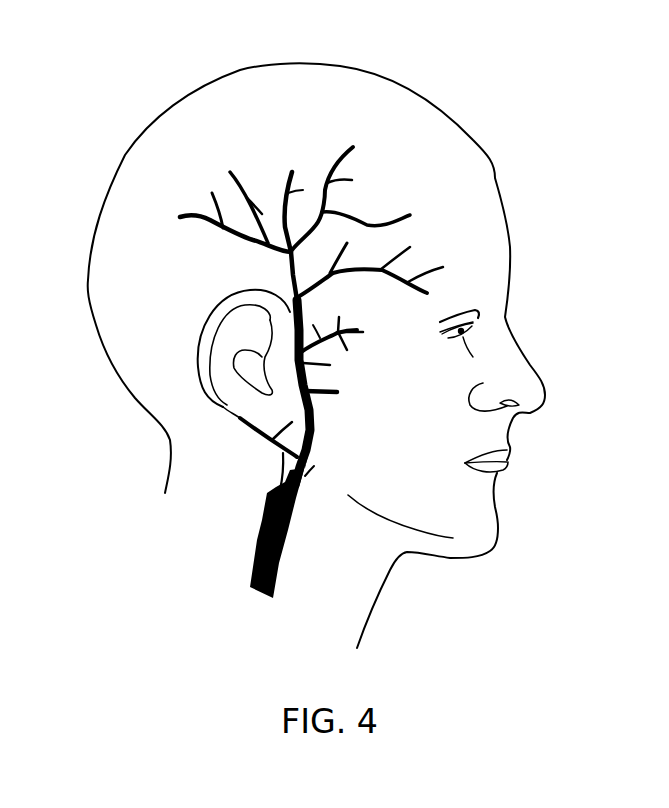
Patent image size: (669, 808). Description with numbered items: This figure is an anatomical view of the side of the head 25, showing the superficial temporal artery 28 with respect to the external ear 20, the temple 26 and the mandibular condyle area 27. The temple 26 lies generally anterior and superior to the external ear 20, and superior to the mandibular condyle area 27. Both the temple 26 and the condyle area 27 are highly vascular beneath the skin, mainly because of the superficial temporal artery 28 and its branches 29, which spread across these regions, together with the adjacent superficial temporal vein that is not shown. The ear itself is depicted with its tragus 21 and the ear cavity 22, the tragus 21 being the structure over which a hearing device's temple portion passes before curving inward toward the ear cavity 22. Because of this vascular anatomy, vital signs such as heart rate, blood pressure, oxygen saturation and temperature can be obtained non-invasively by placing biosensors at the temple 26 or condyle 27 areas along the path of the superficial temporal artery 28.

The external ear 20 is at (198, 348).
The tragus 21 is at (300, 356).
The ear cavity 22 is at (229, 410).
The head 25 is at (283, 80).
The temple 26 is at (363, 287).
The mandibular condyle area 27 is at (300, 356).
The superficial temporal artery 28 is at (290, 303).
The branches 29 is at (357, 333).